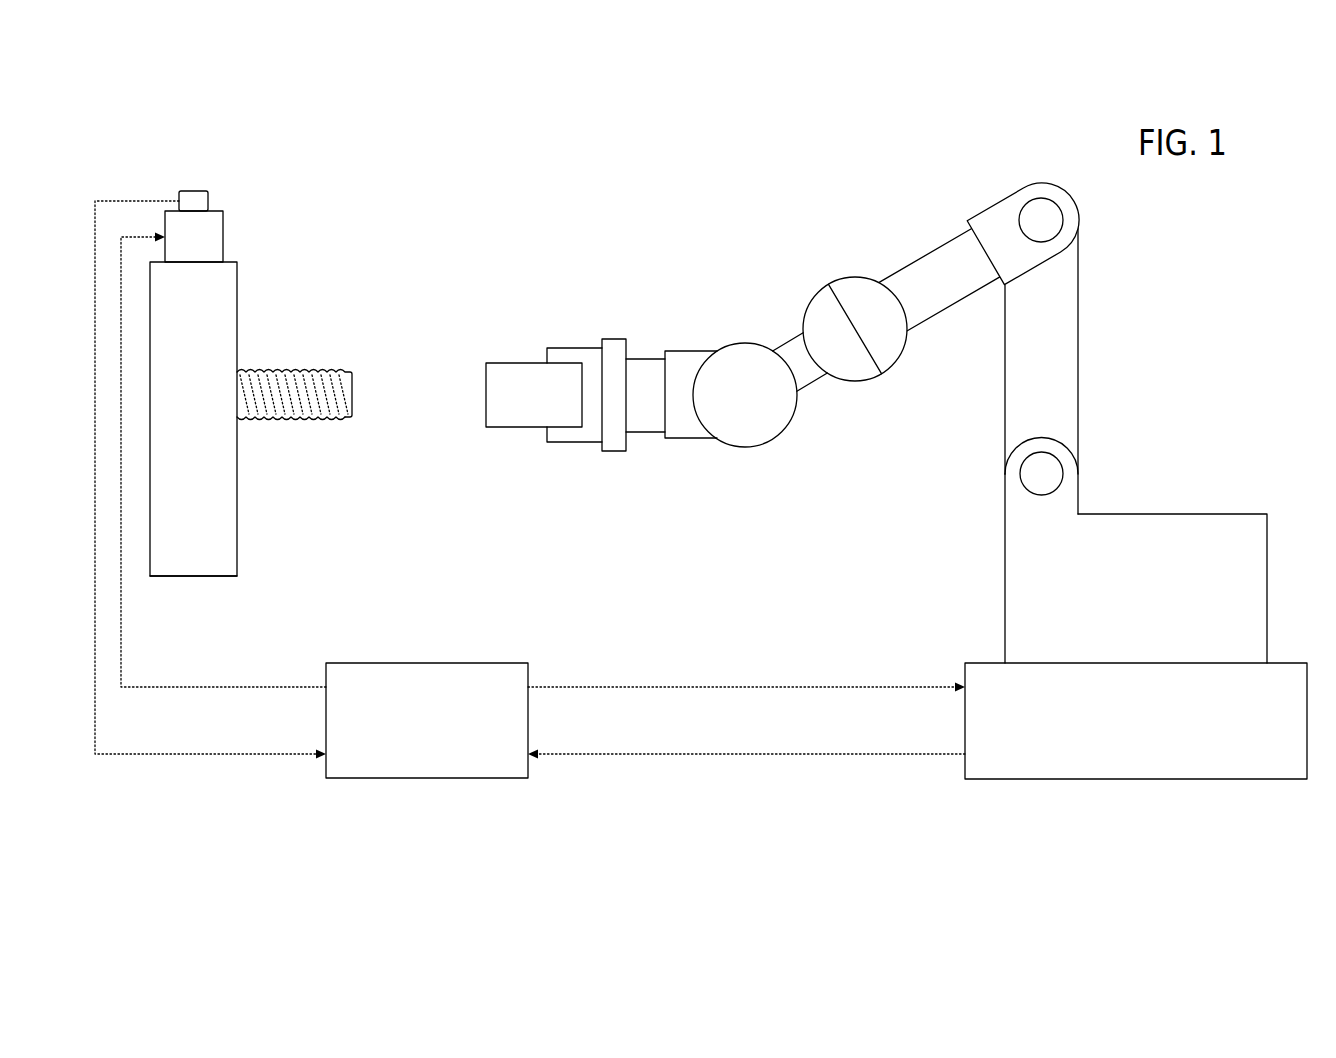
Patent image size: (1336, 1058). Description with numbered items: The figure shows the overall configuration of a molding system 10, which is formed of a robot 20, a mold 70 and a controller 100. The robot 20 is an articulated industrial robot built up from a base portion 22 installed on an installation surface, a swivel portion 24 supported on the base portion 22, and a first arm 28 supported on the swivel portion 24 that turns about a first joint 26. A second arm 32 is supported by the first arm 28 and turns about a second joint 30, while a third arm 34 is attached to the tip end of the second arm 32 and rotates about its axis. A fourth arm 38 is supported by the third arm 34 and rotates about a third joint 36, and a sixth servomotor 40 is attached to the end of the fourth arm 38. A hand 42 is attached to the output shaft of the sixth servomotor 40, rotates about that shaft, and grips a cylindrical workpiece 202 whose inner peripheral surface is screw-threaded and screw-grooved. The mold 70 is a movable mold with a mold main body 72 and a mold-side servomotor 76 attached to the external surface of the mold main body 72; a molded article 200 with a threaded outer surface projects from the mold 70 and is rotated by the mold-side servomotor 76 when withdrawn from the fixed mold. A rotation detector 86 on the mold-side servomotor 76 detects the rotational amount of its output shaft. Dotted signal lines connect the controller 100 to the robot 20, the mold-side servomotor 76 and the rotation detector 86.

The molding system 10 is at (485, 187).
The robot 20 is at (1122, 251).
The base portion 22 is at (1137, 777).
The swivel portion 24 is at (1178, 516).
The first joint 26 is at (1068, 472).
The first arm 28 is at (1067, 330).
The second joint 30 is at (1045, 212).
The second arm 32 is at (948, 240).
The third arm 34 is at (792, 347).
The third joint 36 is at (772, 428).
The fourth arm 38 is at (683, 360).
The sixth servomotor 40 is at (646, 426).
The hand 42 is at (573, 346).
The mold 70 is at (261, 511).
The mold main body 72 is at (200, 578).
The mold-side servomotor 76 is at (225, 228).
The rotation detector 86 is at (197, 188).
The controller 100 is at (488, 668).
The molded article 200 is at (320, 370).
The cylindrical workpiece 202 is at (505, 361).